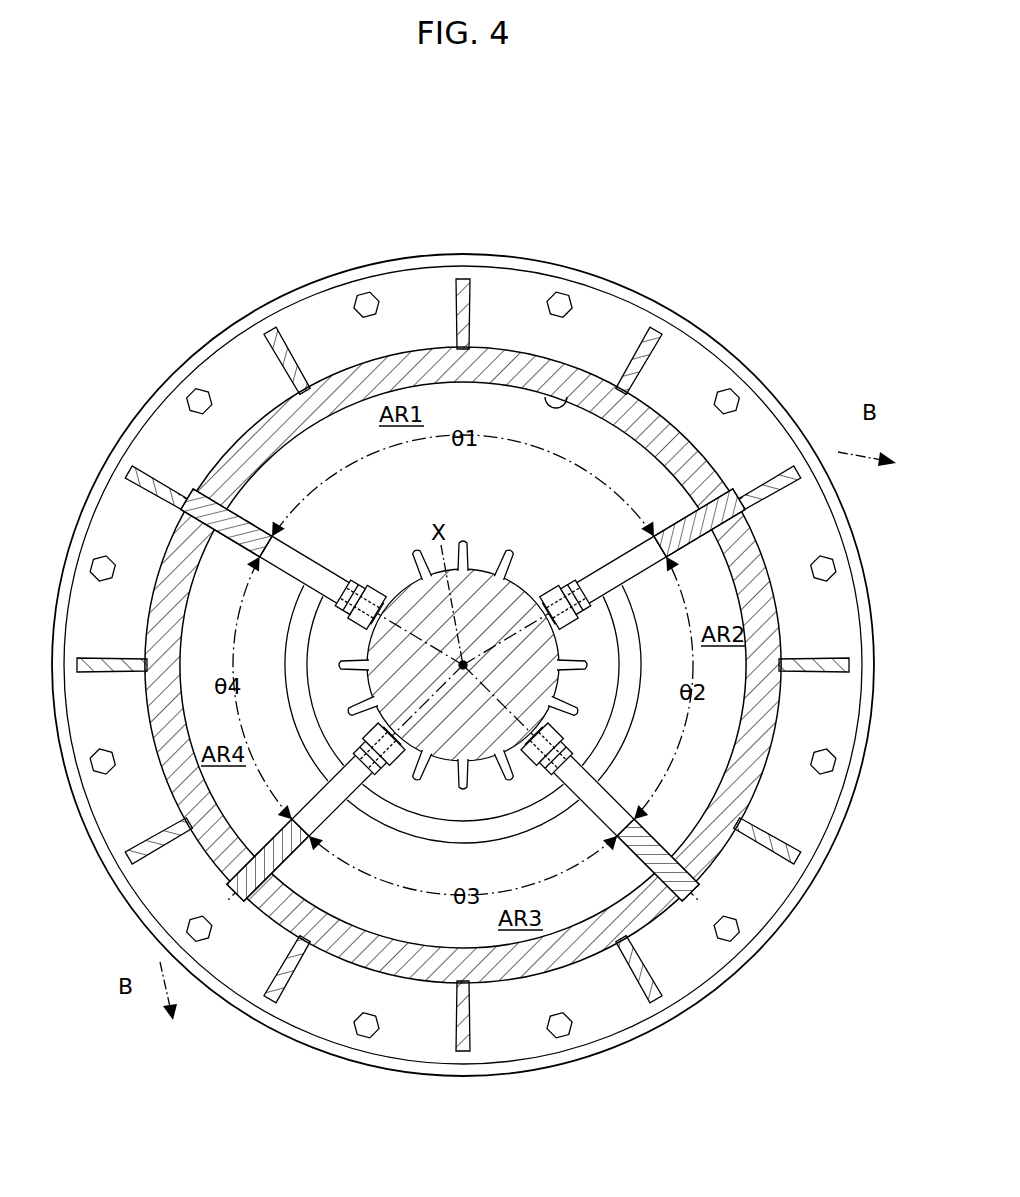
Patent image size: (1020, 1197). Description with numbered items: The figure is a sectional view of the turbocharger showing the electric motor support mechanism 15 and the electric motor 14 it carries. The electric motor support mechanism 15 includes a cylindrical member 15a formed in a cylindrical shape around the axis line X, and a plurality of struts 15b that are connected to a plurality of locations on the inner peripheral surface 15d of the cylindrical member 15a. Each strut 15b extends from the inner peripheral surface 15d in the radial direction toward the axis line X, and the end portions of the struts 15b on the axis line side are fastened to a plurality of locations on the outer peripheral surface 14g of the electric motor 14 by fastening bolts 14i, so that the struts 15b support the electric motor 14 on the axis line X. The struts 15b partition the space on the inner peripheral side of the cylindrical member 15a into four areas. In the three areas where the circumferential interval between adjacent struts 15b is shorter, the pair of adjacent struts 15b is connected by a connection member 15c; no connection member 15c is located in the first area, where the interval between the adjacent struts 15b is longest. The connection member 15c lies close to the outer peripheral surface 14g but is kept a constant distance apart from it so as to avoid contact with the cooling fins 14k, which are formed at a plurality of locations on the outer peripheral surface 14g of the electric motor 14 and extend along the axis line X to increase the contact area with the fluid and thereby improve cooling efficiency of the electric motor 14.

The electric motor 14 is at (600, 722).
The outer peripheral surface 14g is at (477, 572).
The fastening bolts 14i is at (378, 598).
The cooling fins 14k is at (345, 662).
The electric motor support mechanism 15 is at (252, 220).
The cylindrical member 15a is at (413, 252).
The struts 15b is at (313, 572).
The connection member 15c is at (612, 690).
The inner peripheral surface 15d is at (590, 398).